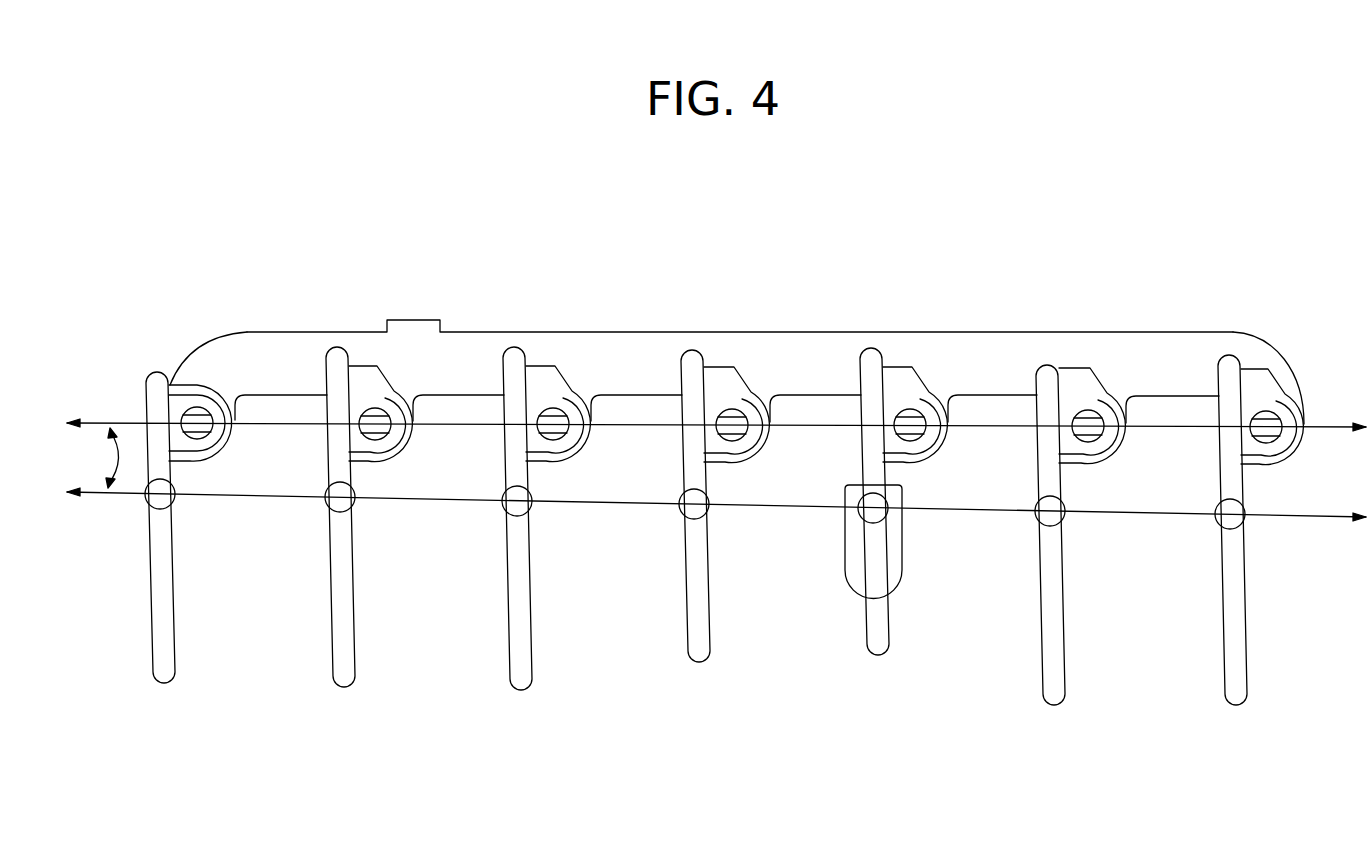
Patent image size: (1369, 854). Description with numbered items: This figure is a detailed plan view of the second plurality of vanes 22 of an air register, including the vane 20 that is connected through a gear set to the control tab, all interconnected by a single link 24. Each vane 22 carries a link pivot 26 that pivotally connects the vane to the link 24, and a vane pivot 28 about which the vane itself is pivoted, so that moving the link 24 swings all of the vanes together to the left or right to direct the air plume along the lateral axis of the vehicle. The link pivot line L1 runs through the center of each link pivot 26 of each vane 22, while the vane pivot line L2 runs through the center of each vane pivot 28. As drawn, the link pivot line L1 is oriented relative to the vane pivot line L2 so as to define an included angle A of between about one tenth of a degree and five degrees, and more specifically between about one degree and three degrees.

The vane 20 is at (868, 585).
The second plurality of vanes 22 is at (177, 607).
The link 24 is at (970, 337).
The link pivot 26 is at (373, 408).
The vane pivot 28 is at (168, 508).
The link pivot line L1 is at (125, 422).
The vane pivot line L2 is at (112, 498).
The included angle A is at (118, 458).